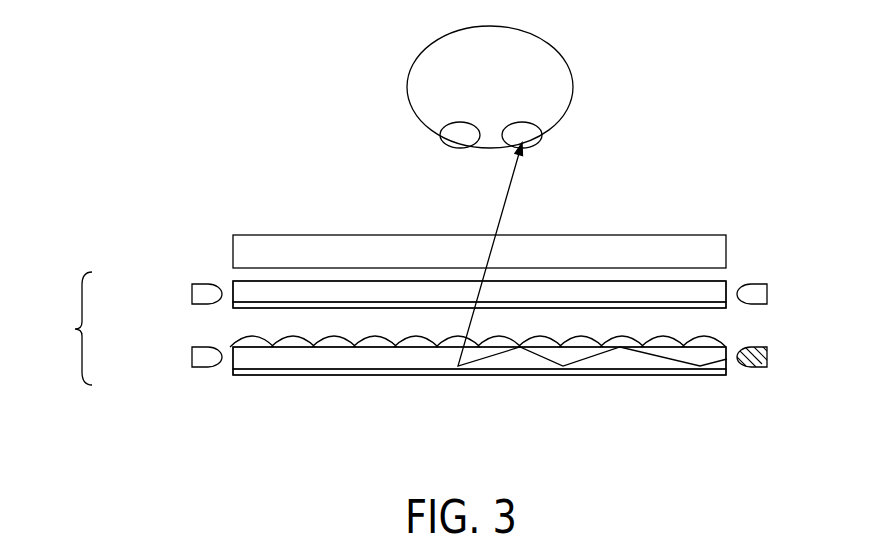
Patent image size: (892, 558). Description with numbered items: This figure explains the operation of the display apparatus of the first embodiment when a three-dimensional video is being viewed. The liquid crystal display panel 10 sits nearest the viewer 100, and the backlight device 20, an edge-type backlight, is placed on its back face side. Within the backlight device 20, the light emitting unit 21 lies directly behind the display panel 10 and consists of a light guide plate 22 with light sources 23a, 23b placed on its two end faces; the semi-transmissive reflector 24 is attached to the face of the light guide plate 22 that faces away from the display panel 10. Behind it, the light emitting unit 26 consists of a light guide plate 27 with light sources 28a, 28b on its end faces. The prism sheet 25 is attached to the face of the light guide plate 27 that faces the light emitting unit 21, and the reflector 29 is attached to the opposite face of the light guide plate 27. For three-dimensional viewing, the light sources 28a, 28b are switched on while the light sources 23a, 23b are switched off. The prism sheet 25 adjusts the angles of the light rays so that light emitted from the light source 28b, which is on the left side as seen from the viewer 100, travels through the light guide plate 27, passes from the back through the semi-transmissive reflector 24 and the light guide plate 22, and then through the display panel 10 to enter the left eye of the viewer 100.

The viewer 100 is at (560, 81).
The liquid crystal display panel 10 is at (678, 242).
The backlight device 20 is at (65, 341).
The light emitting unit 21 is at (120, 307).
The light guide plate 22 is at (449, 290).
The semi-transmissive reflector 24 is at (597, 308).
The light source 23a is at (205, 287).
The light source 23b is at (752, 287).
The light emitting unit 26 is at (120, 369).
The light guide plate 27 is at (261, 362).
The reflector 29 is at (618, 372).
The prism sheet 25 is at (418, 345).
The light source 28a is at (205, 368).
The light source 28b is at (760, 367).